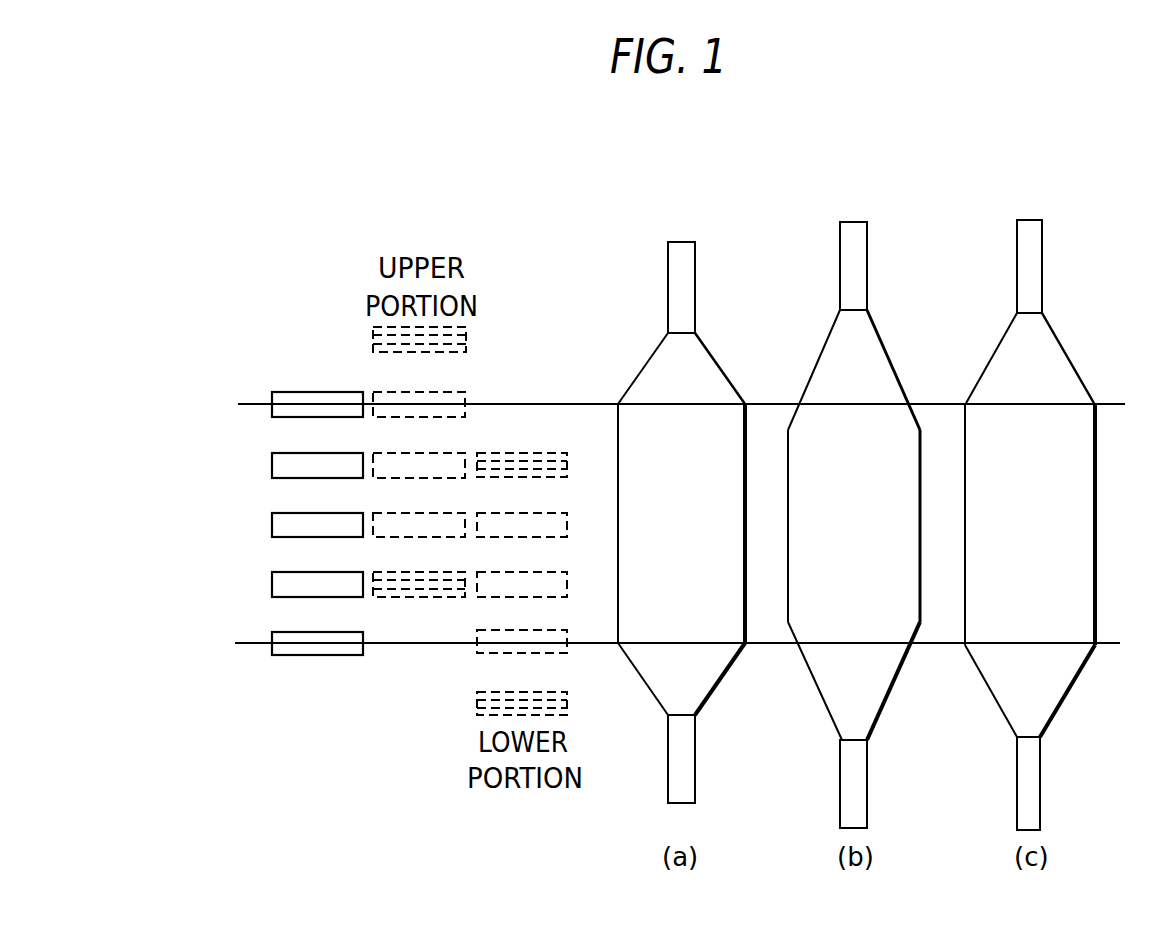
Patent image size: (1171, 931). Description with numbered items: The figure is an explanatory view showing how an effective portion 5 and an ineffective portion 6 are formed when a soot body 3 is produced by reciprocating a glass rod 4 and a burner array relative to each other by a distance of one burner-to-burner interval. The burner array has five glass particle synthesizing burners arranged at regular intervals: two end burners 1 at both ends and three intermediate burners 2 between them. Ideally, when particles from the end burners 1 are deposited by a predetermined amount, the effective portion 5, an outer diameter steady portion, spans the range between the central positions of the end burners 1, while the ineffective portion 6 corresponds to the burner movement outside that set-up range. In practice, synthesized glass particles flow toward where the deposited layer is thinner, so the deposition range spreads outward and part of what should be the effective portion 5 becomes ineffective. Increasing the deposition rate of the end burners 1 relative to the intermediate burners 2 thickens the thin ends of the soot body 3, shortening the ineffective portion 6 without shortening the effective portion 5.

The end burners 1 is at (318, 392).
The intermediate burners 2 is at (260, 445).
The soot body 3 is at (635, 499).
The glass rod 4 is at (697, 287).
The effective portion 5 is at (616, 607).
The ineffective portion 6 is at (722, 363).